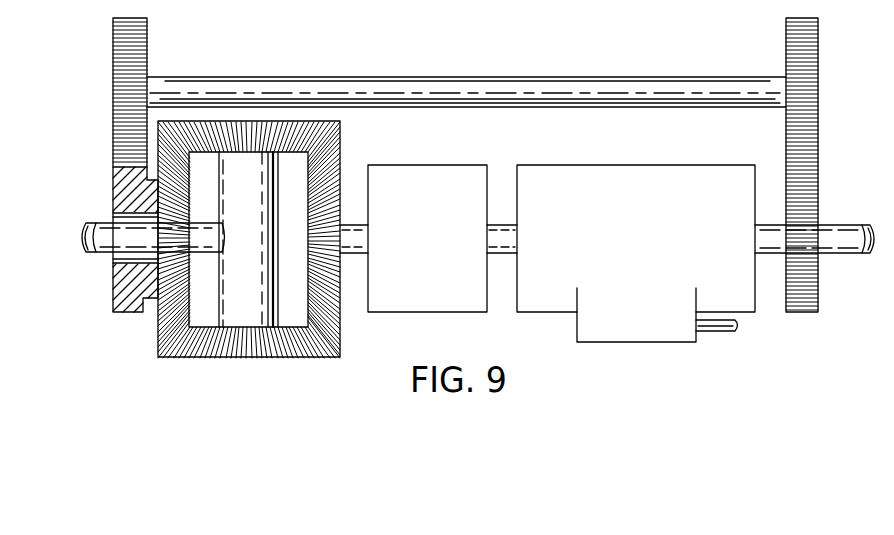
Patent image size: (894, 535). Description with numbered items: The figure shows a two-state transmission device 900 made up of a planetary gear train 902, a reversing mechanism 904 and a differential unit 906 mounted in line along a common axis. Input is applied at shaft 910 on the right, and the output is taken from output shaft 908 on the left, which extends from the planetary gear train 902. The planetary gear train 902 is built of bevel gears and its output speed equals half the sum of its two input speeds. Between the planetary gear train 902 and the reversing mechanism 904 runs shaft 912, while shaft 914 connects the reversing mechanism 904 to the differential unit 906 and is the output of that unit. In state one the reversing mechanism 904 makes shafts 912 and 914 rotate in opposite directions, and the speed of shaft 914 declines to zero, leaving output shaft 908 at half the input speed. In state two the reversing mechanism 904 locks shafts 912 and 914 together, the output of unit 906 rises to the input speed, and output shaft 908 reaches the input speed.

The device 900 is at (312, 72).
The planetary gear train 902 is at (264, 357).
The reversing mechanism 904 is at (452, 228).
The differential unit 906 is at (656, 228).
The output shaft 908 is at (97, 255).
The input shaft 910 is at (843, 225).
The shaft 912 is at (355, 224).
The shaft 914 is at (500, 224).